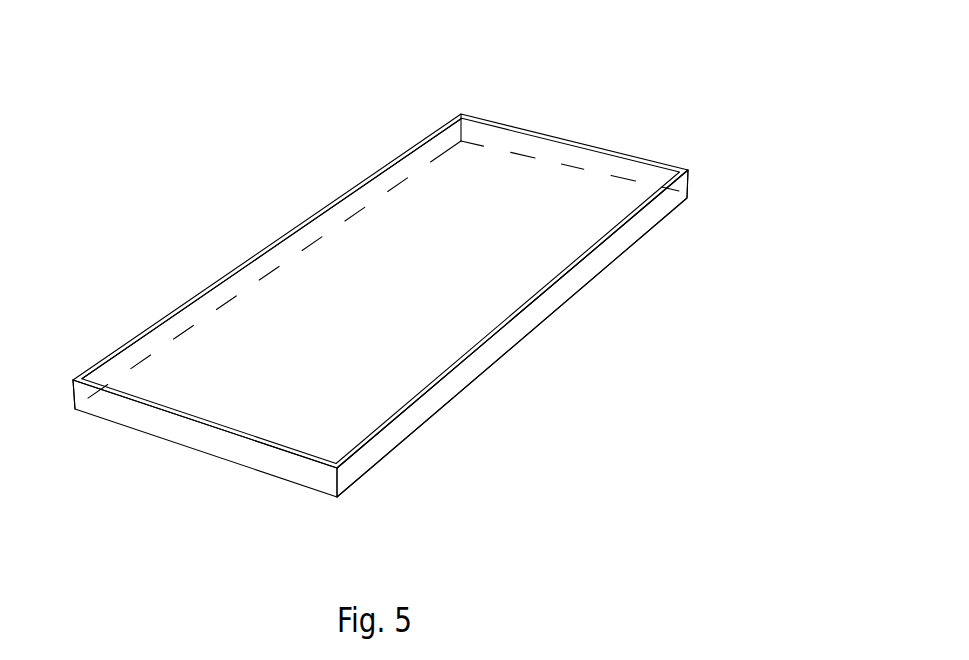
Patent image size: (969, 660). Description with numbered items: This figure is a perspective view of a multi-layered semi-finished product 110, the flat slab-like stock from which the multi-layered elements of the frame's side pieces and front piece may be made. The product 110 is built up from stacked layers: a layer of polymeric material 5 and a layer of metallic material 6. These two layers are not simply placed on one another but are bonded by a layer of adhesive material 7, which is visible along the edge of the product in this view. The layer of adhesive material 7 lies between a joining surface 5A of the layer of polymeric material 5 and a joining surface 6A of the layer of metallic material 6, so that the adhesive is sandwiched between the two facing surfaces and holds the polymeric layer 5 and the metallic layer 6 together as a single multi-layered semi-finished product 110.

The multi-layered semi-finished product 110 is at (762, 96).
The layer of polymeric material 5 is at (515, 332).
The layer of adhesive material 7 is at (418, 401).
The layer of metallic material 6 is at (263, 265).
The joining surface of the layer of polymeric material 5A is at (100, 392).
The joining surface of the layer of metallic material 6A is at (297, 460).